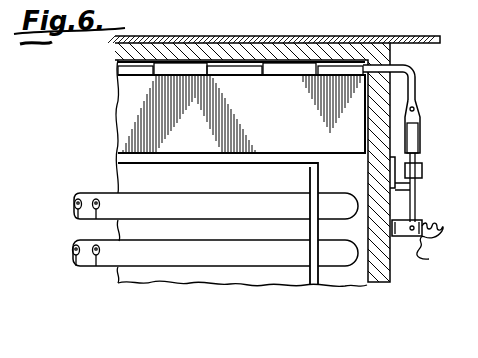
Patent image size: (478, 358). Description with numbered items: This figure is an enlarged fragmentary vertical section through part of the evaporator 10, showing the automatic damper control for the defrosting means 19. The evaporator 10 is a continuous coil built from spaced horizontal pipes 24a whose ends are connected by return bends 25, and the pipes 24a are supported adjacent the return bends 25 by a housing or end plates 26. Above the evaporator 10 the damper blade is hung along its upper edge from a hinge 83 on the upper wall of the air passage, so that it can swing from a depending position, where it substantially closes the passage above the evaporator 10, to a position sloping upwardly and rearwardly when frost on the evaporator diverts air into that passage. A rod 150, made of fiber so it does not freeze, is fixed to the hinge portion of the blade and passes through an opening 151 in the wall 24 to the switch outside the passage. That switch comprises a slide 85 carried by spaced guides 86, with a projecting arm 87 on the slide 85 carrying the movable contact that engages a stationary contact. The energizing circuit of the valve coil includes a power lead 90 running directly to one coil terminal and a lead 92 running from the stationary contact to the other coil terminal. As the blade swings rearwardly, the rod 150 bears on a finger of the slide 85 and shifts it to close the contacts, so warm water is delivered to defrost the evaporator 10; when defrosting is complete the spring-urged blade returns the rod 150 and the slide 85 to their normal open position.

The evaporator 10 is at (110, 277).
The defrosting means 19 is at (423, 89).
The wall 24 is at (387, 264).
The horizontal pipes 24a is at (107, 205).
The return bends 25 is at (343, 258).
The end plates 26 is at (312, 270).
The hinge 83 is at (283, 65).
The slide 85 is at (422, 172).
The guides 86 is at (417, 184).
The projecting arm 87 is at (414, 203).
The power lead 90 is at (440, 253).
The lead 92 is at (430, 262).
The rod 150 is at (415, 100).
The opening 151 is at (387, 66).